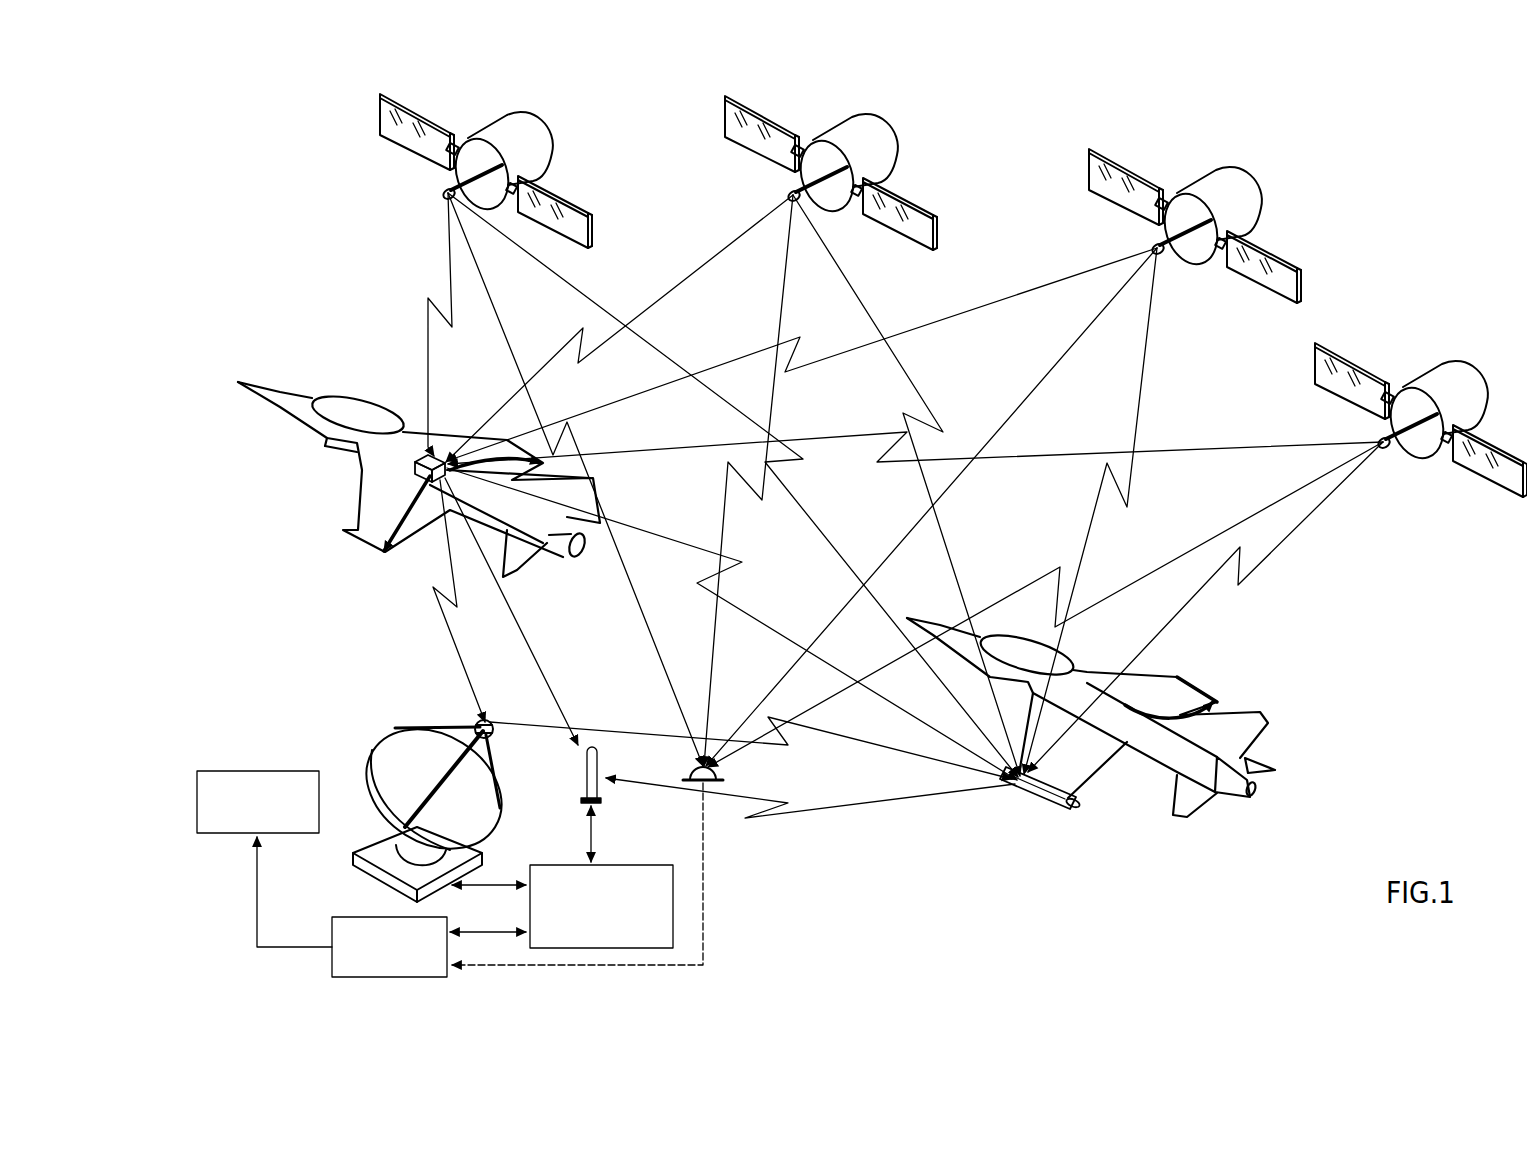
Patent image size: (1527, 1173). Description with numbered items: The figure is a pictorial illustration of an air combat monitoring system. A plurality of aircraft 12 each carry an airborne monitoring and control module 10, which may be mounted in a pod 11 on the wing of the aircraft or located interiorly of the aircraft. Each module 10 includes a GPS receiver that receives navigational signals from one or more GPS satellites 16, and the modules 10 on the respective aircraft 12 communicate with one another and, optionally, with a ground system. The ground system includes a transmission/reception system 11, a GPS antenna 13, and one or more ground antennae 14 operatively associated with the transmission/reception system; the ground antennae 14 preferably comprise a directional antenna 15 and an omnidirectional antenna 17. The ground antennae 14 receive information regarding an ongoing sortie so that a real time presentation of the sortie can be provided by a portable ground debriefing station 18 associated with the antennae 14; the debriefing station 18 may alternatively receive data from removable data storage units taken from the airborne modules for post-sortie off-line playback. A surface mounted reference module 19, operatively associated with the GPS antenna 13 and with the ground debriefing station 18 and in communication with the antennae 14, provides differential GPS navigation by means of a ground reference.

The airborne monitoring and control module 10 is at (422, 456).
The pod / transmission/reception system 11 is at (561, 865).
The aircraft 12 is at (374, 512).
The GPS antenna 13 is at (713, 777).
The ground antennae 14 is at (336, 689).
The directional antenna 15 is at (398, 735).
The GPS satellite 16 is at (523, 155).
The omnidirectional antenna 17 is at (584, 767).
The ground debriefing station 18 is at (197, 800).
The reference module 19 is at (372, 917).